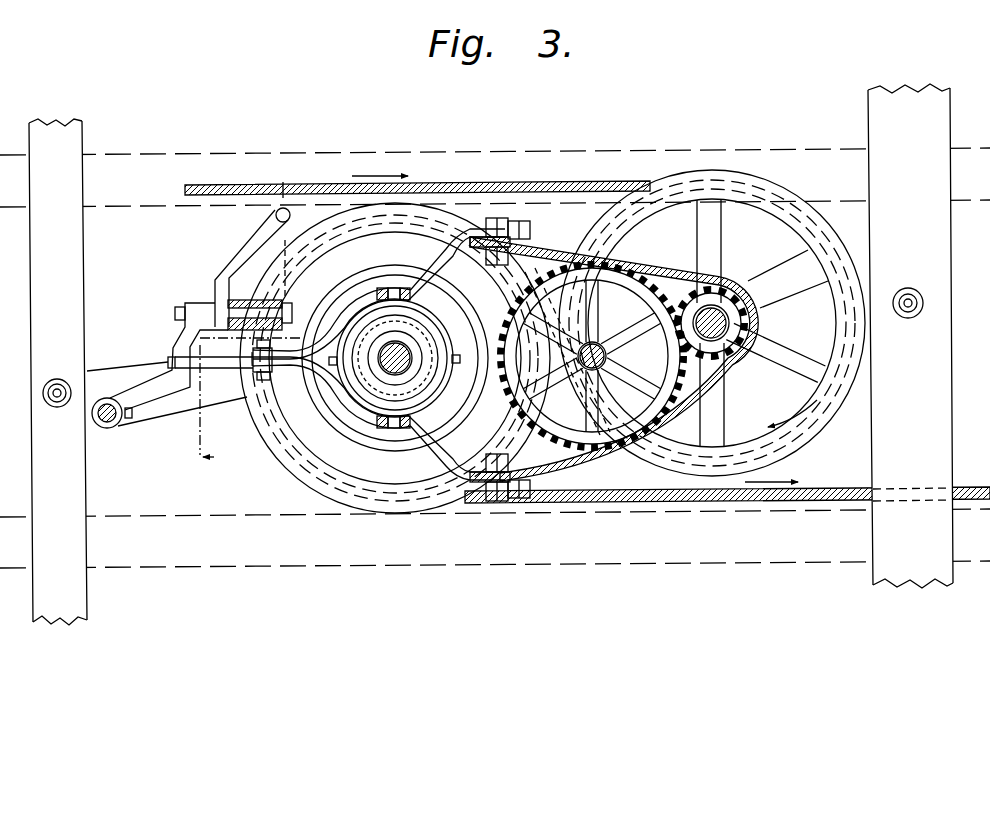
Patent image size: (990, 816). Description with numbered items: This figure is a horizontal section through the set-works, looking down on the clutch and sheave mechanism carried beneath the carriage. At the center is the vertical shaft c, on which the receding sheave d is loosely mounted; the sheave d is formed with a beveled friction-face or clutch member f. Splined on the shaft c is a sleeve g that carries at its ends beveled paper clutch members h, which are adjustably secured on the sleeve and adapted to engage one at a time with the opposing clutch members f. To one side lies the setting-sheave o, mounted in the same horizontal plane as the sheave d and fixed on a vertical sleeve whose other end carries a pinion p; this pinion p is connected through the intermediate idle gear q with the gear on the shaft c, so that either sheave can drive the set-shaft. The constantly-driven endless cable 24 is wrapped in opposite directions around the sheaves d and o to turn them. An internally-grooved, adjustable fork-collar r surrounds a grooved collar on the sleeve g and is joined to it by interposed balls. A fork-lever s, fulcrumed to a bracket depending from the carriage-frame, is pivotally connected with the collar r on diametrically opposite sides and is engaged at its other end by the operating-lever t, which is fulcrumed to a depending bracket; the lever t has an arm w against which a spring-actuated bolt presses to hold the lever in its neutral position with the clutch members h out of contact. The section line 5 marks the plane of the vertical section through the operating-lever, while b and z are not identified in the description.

The endless cable 24 is at (520, 184).
The section line 5 5 is at (242, 323).
The frame posts b is at (491, 354).
The setting-sheave o is at (803, 438).
The pinion p is at (733, 293).
The intermediate idle gear q is at (592, 347).
The brake drum z is at (372, 248).
The sheave d is at (288, 462).
The friction clutch members h is at (374, 444).
The sleeve g is at (412, 364).
The vertical shaft c is at (402, 352).
The friction clutch member f is at (394, 448).
The fork-lever s is at (433, 261).
The fork-collar r is at (341, 354).
The operating-lever t is at (172, 345).
The arm w is at (253, 247).